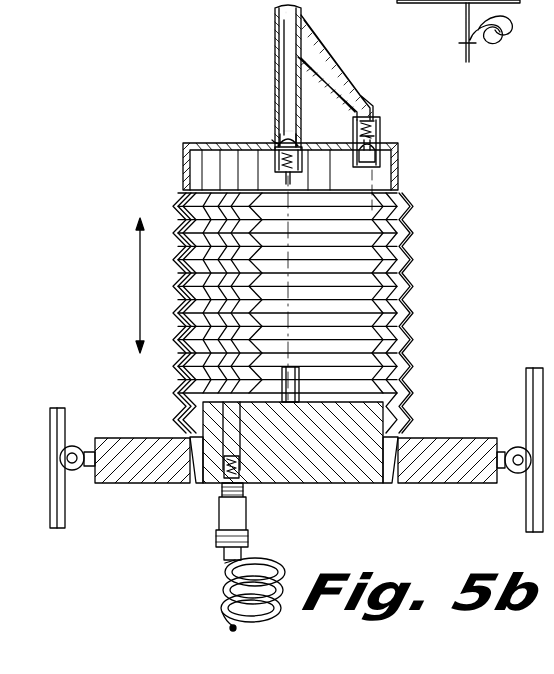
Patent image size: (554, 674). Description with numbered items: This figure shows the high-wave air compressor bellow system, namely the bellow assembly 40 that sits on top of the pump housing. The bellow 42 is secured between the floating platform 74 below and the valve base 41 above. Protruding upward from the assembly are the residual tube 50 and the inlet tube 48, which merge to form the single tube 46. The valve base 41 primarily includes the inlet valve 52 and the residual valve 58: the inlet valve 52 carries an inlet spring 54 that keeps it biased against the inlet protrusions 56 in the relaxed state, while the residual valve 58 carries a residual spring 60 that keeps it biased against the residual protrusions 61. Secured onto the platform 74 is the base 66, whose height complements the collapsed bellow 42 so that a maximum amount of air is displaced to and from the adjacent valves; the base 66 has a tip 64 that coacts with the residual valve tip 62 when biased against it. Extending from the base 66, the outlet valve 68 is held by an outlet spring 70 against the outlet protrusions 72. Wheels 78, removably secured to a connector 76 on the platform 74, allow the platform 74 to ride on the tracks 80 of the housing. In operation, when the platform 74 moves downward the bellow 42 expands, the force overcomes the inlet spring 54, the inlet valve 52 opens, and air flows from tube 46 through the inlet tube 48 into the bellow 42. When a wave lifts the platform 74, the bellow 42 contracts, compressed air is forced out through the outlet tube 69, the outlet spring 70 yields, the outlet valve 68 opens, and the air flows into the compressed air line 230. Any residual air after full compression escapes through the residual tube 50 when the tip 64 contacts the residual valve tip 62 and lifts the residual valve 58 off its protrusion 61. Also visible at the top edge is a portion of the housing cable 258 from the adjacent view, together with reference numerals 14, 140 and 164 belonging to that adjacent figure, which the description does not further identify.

The item of adjacent figure 14 is at (546, 245).
The bellow assembly 40 is at (322, 338).
The valve base 41 is at (398, 176).
The bellow 42 is at (368, 305).
The tube 46 is at (286, 12).
The inlet tube 48 is at (337, 83).
The residual tube 50 is at (292, 78).
The inlet valve 52 is at (375, 115).
The inlet spring 54 is at (382, 126).
The inlet protrusions 56 is at (378, 143).
The residual valve 58 is at (283, 132).
The residual spring 60 is at (303, 141).
The residual protrusions 61 is at (273, 139).
The residual valve tip 62 is at (293, 173).
The tip 64 is at (302, 373).
The base 66 is at (343, 475).
The outlet valve 68 is at (223, 460).
The outlet tube 69 is at (233, 417).
The outlet spring 70 is at (230, 490).
The outlet protrusions 72 is at (255, 483).
The platform 74 is at (440, 443).
The connector 76 is at (501, 453).
The wheels 78 is at (510, 470).
The tracks 80 is at (530, 500).
The item of adjacent figure 140 is at (553, 186).
The item of adjacent figure 164 is at (538, 146).
The compressed air line 230 is at (258, 560).
The cable 258 is at (467, 33).